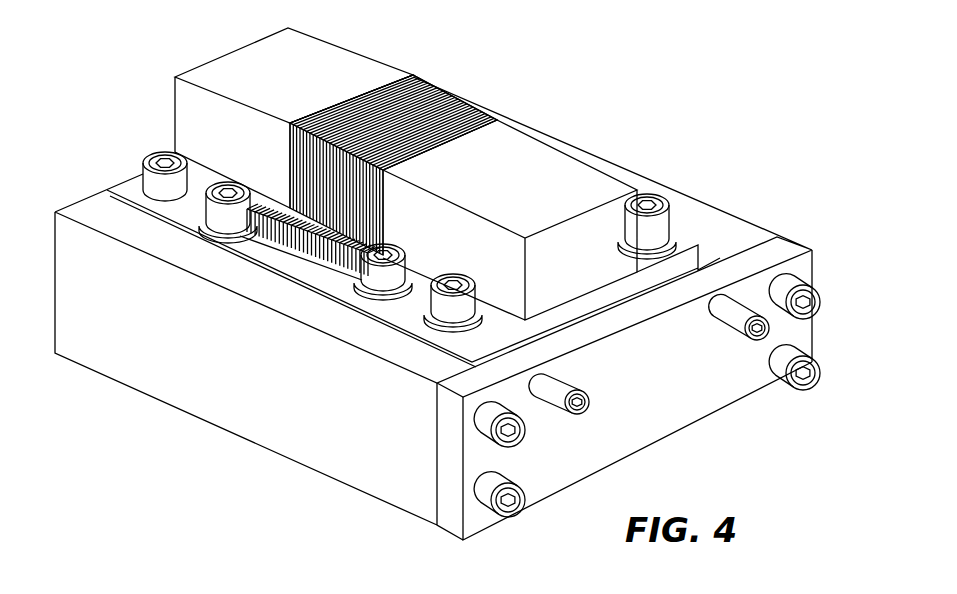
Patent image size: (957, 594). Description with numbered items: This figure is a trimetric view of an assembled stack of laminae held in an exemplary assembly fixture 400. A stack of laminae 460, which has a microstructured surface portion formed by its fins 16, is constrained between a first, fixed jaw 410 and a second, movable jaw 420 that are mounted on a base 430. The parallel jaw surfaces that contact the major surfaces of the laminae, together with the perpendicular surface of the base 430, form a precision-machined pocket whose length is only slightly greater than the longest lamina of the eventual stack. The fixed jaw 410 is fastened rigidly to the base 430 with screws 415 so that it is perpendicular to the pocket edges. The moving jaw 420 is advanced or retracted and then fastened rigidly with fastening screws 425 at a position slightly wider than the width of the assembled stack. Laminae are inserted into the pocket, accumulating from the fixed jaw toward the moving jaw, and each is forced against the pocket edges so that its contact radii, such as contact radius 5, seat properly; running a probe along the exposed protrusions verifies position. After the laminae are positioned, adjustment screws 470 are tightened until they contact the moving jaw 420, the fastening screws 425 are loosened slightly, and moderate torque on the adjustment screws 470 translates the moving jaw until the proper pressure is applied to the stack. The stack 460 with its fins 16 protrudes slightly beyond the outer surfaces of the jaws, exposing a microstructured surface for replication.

The assembly fixture 400 is at (567, 65).
The fixed jaw 410 is at (241, 59).
The fins 16 is at (395, 72).
The stack of laminae 460 is at (500, 112).
The moving jaw 420 is at (533, 163).
The screws 415 is at (213, 213).
The fastening screws 425 is at (441, 306).
The contact radius 5 is at (313, 272).
The base 430 is at (238, 420).
The adjustment screws 470 is at (745, 339).